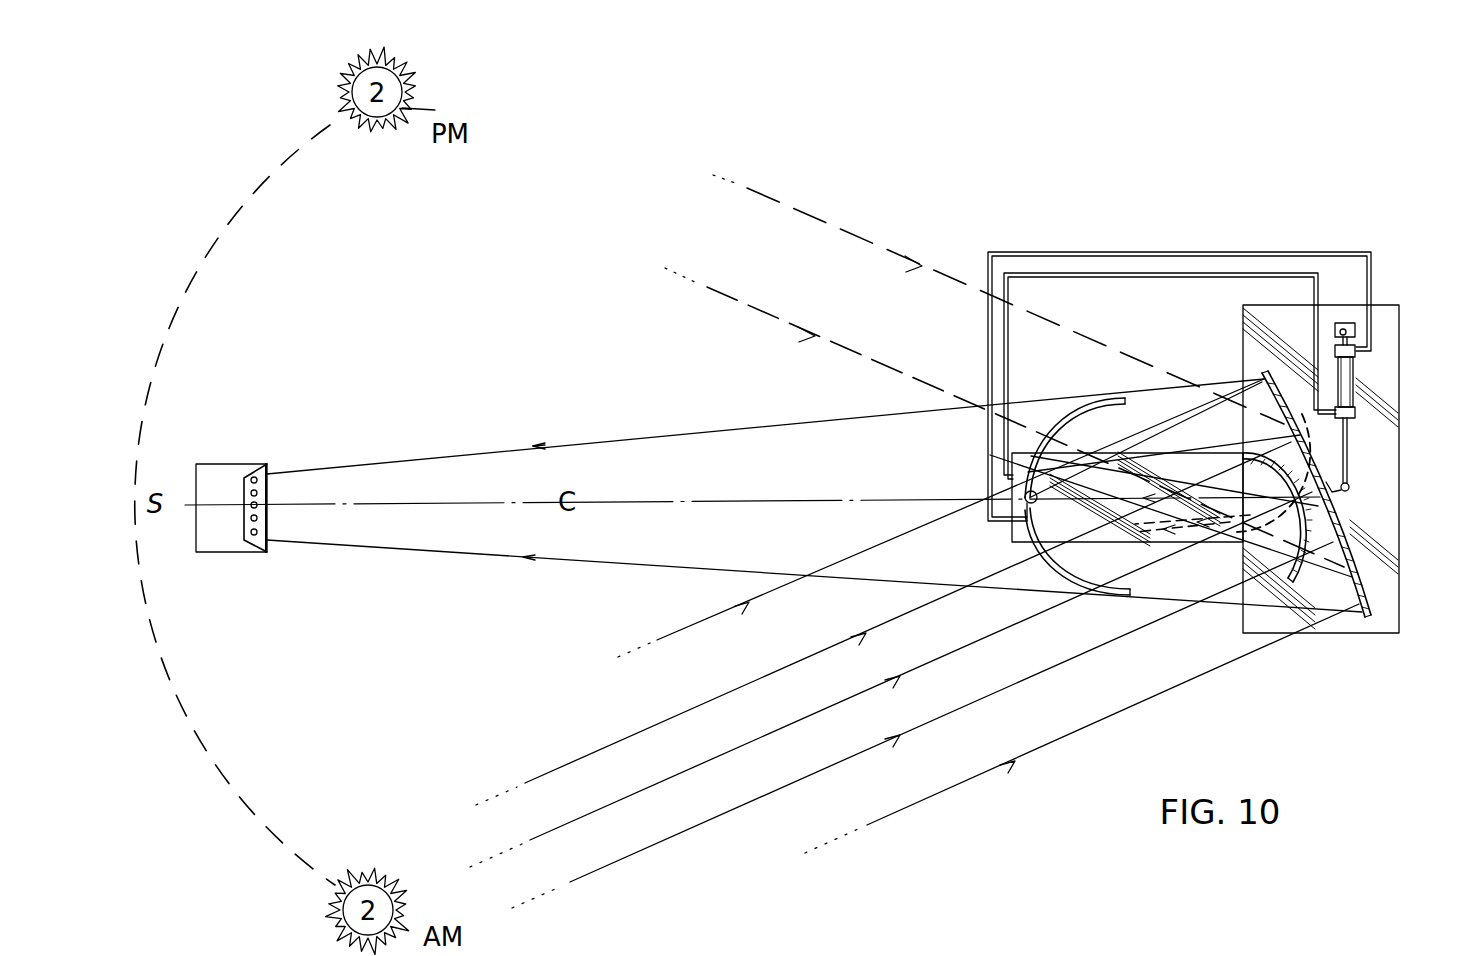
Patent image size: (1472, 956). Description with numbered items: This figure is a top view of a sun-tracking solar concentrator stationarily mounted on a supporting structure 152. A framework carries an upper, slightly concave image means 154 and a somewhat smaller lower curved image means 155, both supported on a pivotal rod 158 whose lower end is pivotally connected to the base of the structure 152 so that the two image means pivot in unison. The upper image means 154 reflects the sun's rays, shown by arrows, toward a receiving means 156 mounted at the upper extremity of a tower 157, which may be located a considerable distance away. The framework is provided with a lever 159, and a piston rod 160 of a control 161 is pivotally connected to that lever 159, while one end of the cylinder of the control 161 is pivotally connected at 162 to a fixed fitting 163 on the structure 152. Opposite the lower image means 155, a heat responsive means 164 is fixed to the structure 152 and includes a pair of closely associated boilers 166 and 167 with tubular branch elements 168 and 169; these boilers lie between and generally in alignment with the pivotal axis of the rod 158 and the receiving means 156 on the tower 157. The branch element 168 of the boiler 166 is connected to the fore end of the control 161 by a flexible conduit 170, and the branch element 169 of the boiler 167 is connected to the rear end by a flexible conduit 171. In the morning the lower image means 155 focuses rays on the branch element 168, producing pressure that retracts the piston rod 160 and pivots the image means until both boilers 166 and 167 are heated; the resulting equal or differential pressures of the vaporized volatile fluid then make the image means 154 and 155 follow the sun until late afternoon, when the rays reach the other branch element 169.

The supporting structure 152 is at (1405, 615).
The upper image means 154 is at (1362, 617).
The lower curved image means 155 is at (1312, 548).
The receiving means 156 is at (262, 521).
The tower 157 is at (236, 466).
The pivotal rod 158 is at (1243, 528).
The lever 159 is at (1355, 488).
The piston rod 160 is at (1350, 447).
The control 161 is at (1352, 382).
The pivotal connection 162 is at (1358, 332).
The fixed fitting 163 is at (1356, 324).
The heat responsive means 164 is at (985, 452).
The boiler 166 is at (1012, 536).
The boiler 167 is at (1024, 496).
The tubular branch element 168 is at (1058, 576).
The tubular branch element 169 is at (1060, 428).
The flexible conduit 170 is at (1228, 274).
The flexible conduit 171 is at (1115, 251).